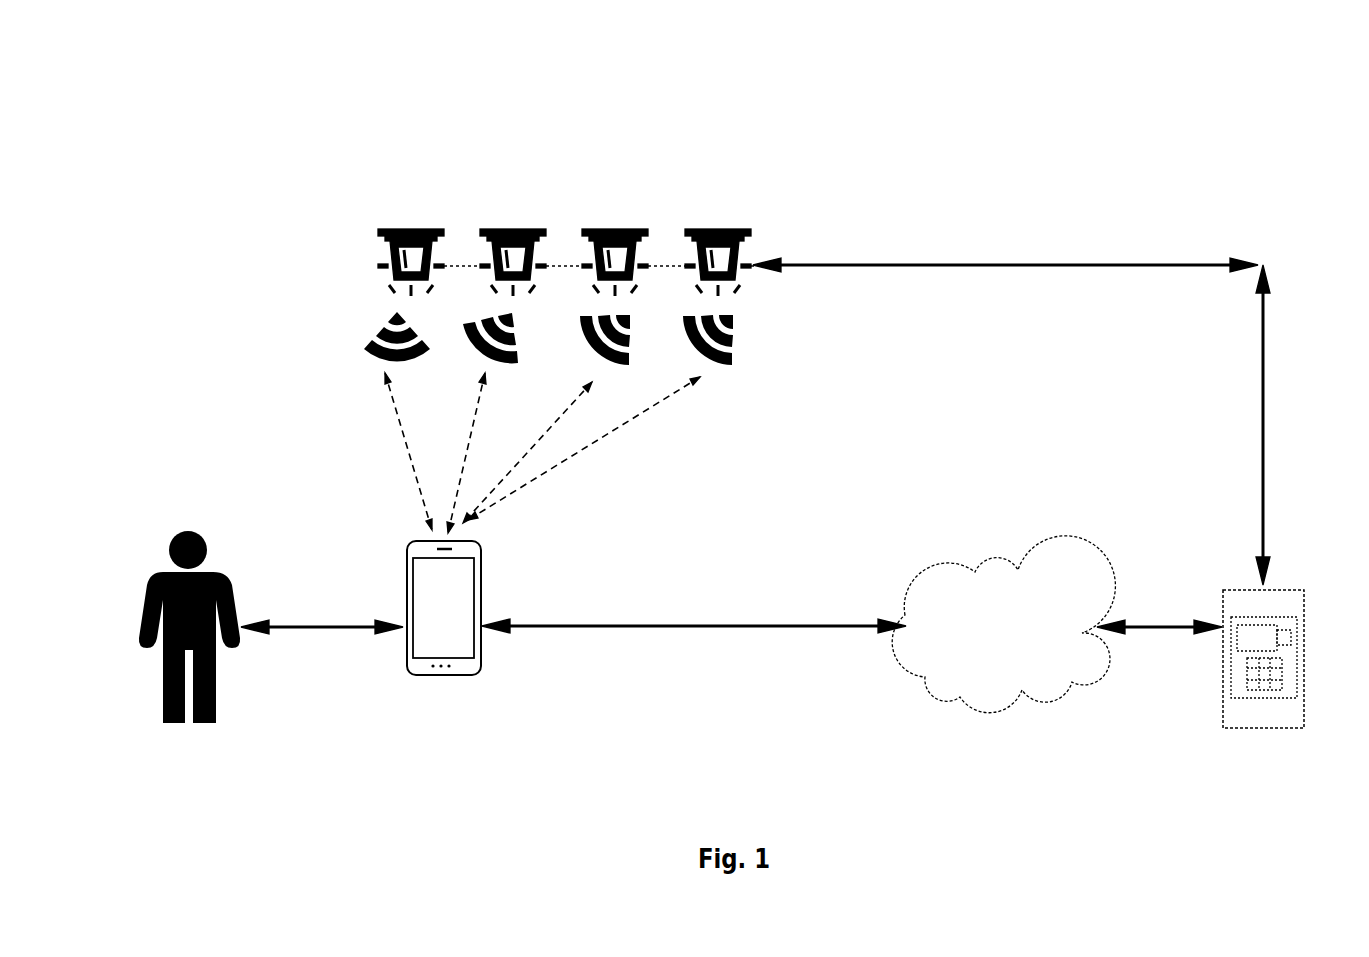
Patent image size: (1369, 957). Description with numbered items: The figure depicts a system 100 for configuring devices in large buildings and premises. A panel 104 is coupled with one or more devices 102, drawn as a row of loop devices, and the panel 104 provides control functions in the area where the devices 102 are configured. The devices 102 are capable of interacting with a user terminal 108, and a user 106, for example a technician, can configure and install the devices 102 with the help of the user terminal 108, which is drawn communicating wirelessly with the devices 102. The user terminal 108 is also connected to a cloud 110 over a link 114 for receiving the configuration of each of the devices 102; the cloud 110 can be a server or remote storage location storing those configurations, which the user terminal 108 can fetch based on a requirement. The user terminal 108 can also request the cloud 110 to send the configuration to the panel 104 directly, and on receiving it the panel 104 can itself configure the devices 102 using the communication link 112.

The system 100 is at (764, 108).
The devices 102 is at (725, 222).
The panel 104 is at (1304, 698).
The user 106 is at (160, 688).
The user terminal 108 is at (482, 607).
The cloud 110 is at (1080, 555).
The communication link 112 is at (1090, 254).
The communication link between user terminal and cloud 114 is at (808, 621).